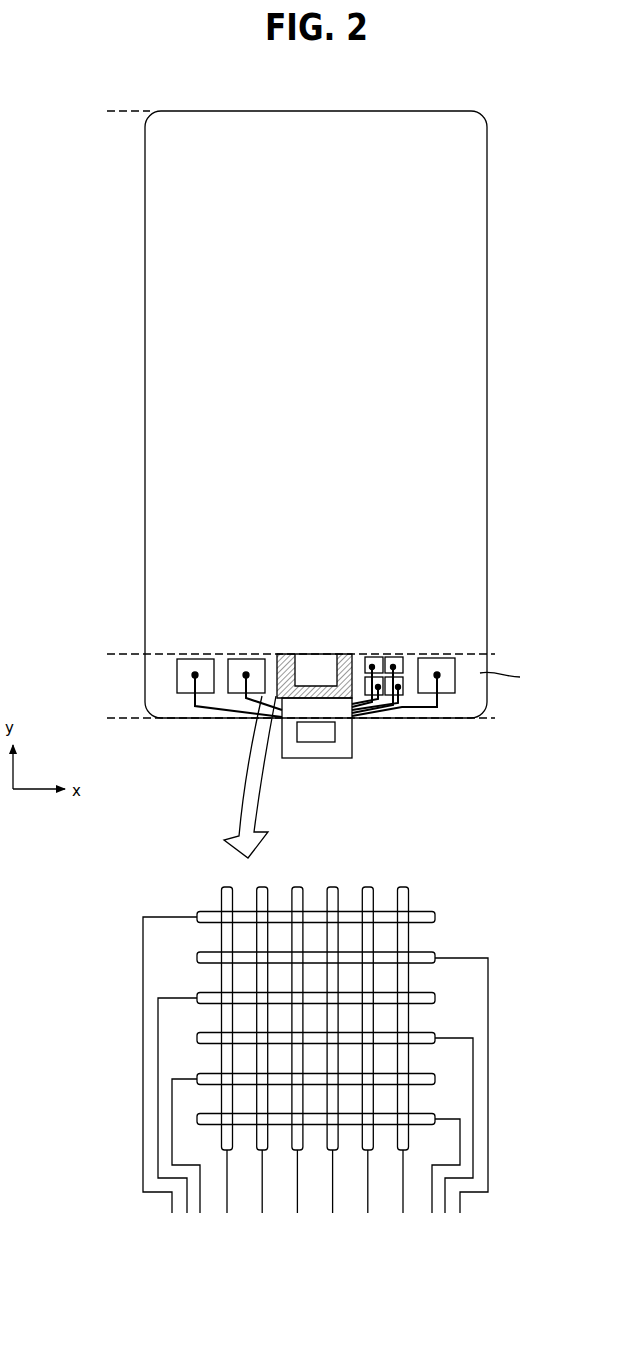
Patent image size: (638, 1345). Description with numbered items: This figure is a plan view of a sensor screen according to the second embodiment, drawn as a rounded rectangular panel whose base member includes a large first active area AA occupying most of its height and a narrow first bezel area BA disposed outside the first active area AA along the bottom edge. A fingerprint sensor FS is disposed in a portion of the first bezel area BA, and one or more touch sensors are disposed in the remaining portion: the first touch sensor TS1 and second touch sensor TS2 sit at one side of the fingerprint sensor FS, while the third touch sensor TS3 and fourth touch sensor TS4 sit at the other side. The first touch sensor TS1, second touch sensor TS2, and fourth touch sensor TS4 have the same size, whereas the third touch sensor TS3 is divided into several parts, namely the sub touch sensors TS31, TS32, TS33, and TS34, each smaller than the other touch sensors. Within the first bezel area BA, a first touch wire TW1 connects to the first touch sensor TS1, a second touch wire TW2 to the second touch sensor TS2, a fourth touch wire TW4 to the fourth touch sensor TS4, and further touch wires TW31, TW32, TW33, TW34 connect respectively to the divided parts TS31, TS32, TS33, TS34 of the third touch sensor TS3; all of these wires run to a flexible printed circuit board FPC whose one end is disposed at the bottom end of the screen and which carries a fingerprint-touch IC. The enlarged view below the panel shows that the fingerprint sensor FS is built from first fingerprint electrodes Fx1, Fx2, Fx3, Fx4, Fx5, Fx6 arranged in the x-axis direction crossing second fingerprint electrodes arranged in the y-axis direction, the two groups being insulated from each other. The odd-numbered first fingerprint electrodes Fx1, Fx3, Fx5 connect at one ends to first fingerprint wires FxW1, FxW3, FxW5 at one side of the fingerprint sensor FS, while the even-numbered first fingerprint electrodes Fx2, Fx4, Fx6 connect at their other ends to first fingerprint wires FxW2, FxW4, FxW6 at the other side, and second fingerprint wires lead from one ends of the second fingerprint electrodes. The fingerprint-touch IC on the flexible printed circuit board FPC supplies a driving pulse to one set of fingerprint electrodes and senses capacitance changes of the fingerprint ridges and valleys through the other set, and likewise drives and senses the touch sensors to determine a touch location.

The first active area AA is at (114, 645).
The first bezel area BA is at (114, 662).
The fingerprint sensor FS is at (332, 665).
The first touch sensor TS1 is at (181, 693).
The second touch sensor TS2 is at (230, 693).
The third touch sensor TS3 is at (570, 560).
The 3-1 touch sensor TS31 is at (377, 656).
The 3-2 touch sensor TS32 is at (393, 656).
The 3-3 touch sensor TS33 is at (386, 656).
The 3-4 touch sensor TS34 is at (406, 680).
The fourth touch sensor TS4 is at (455, 693).
The first touch wire TW1 is at (194, 704).
The second touch wire TW2 is at (244, 703).
The 3-1 touch wire TW31 is at (360, 712).
The 3-2 touch wire TW32 is at (380, 715).
The 3-3 touch wire TW33 is at (398, 712).
The 3-4 touch wire TW34 is at (425, 713).
The fourth touch wire TW4 is at (455, 710).
The flexible printed circuit board FPC is at (288, 760).
The first fingerprint electrode Fx1 is at (412, 915).
The first fingerprint electrode Fx2 is at (412, 955).
The first fingerprint electrode Fx3 is at (412, 995).
The first fingerprint electrode Fx4 is at (412, 1035).
The first fingerprint electrode Fx5 is at (412, 1076).
The first fingerprint electrode Fx6 is at (412, 1116).
The 1-1 fingerprint wire FxW1 is at (143, 1093).
The 1-2 fingerprint wire FxW2 is at (488, 1092).
The 1-1 fingerprint wire FxW3 is at (158, 1120).
The 1-2 fingerprint wire FxW4 is at (473, 1121).
The 1-1 fingerprint wire FxW5 is at (172, 1147).
The 1-2 fingerprint wire FxW6 is at (460, 1148).